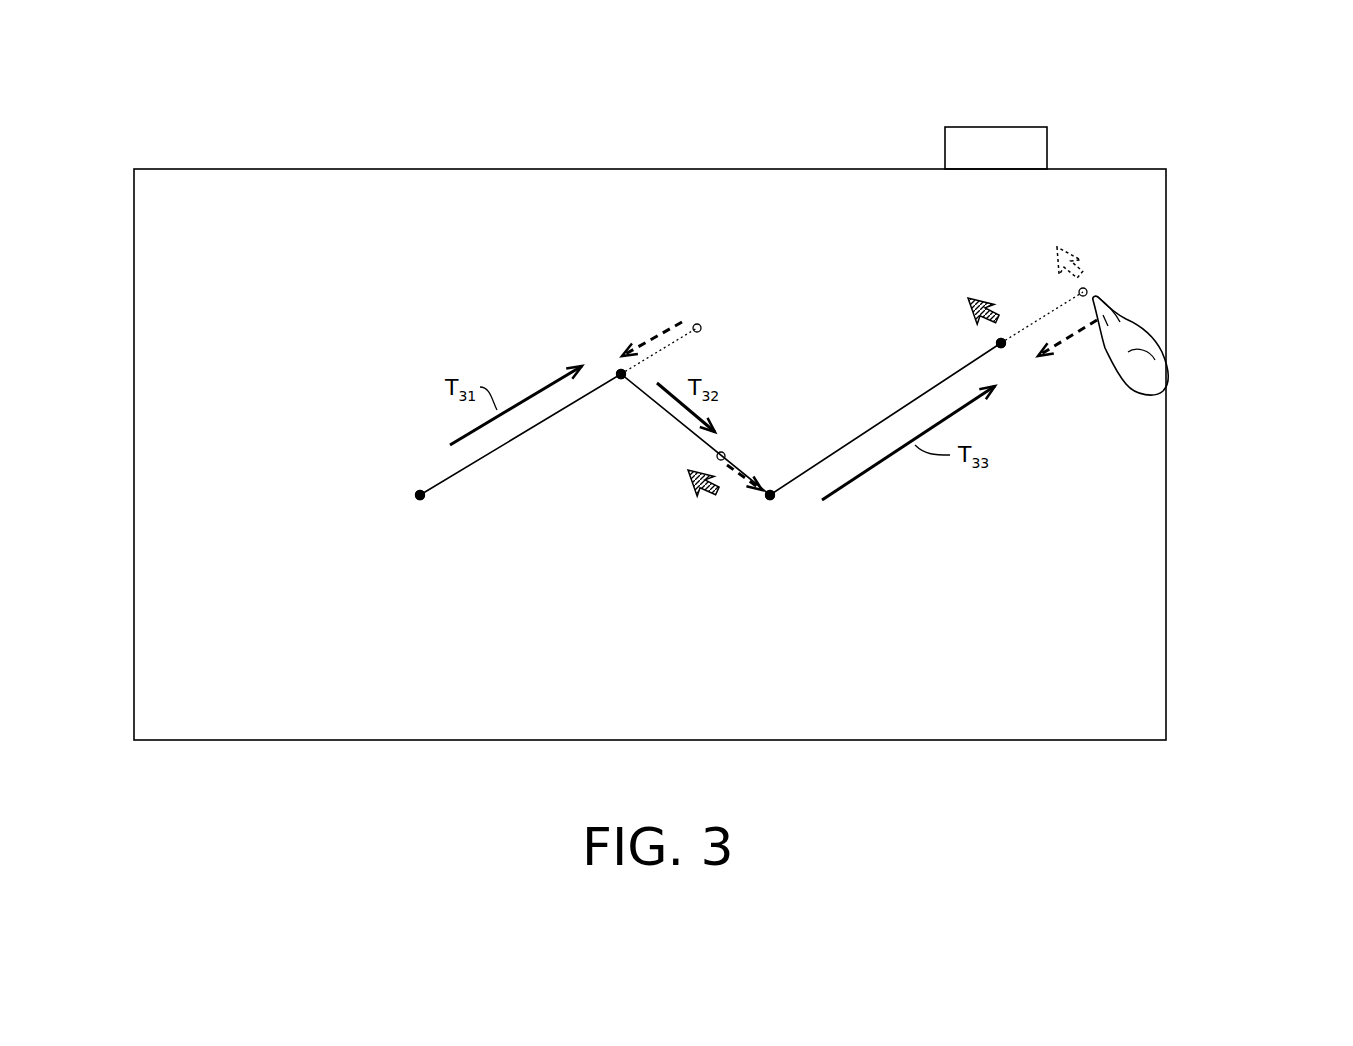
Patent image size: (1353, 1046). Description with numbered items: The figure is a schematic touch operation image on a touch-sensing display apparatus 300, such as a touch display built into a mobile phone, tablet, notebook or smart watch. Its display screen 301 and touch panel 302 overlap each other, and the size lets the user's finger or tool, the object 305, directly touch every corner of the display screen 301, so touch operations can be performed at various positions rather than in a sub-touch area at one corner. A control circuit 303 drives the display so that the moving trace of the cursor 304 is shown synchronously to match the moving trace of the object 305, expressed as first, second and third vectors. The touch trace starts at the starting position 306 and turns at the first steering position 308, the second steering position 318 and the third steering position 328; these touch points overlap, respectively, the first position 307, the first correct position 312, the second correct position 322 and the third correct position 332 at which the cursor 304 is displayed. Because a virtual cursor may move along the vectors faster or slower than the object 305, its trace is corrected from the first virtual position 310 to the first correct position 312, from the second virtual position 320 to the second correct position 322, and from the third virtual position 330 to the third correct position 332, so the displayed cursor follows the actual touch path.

The touch-sensing display apparatus 300 is at (102, 80).
The display screen 301 is at (1134, 213).
The touch panel 302 is at (1115, 168).
The control circuit 303 is at (1017, 163).
The cursor 304 is at (840, 400).
The object 305 is at (1150, 355).
The starting position 306 is at (420, 495).
The first position 307 is at (412, 570).
The first steering position 308 is at (621, 374).
The first virtual position 310 is at (697, 328).
The first correct position 312 is at (585, 291).
The second steering position 318 is at (770, 495).
The second virtual position 320 is at (721, 456).
The second correct position 322 is at (910, 585).
The third steering position 328 is at (1001, 343).
The third virtual position 330 is at (1083, 292).
The third correct position 332 is at (1158, 530).